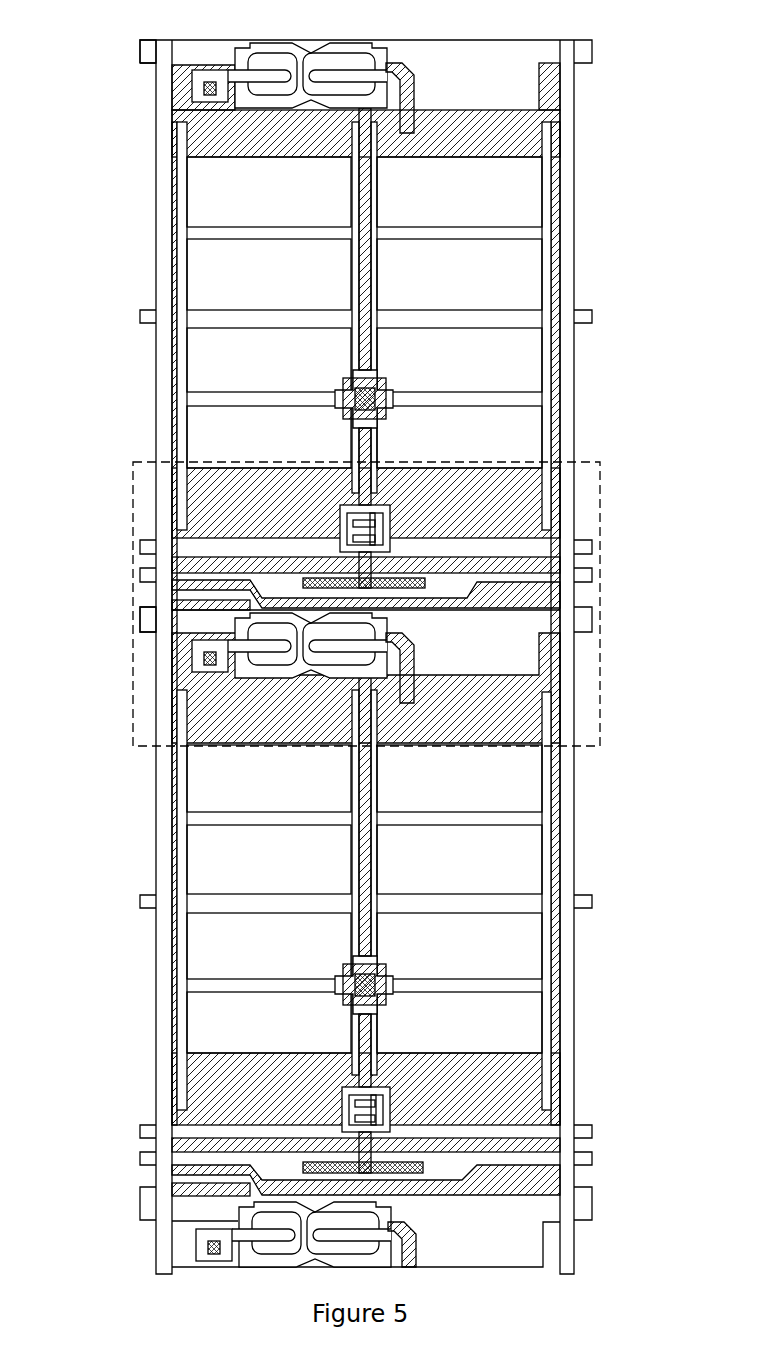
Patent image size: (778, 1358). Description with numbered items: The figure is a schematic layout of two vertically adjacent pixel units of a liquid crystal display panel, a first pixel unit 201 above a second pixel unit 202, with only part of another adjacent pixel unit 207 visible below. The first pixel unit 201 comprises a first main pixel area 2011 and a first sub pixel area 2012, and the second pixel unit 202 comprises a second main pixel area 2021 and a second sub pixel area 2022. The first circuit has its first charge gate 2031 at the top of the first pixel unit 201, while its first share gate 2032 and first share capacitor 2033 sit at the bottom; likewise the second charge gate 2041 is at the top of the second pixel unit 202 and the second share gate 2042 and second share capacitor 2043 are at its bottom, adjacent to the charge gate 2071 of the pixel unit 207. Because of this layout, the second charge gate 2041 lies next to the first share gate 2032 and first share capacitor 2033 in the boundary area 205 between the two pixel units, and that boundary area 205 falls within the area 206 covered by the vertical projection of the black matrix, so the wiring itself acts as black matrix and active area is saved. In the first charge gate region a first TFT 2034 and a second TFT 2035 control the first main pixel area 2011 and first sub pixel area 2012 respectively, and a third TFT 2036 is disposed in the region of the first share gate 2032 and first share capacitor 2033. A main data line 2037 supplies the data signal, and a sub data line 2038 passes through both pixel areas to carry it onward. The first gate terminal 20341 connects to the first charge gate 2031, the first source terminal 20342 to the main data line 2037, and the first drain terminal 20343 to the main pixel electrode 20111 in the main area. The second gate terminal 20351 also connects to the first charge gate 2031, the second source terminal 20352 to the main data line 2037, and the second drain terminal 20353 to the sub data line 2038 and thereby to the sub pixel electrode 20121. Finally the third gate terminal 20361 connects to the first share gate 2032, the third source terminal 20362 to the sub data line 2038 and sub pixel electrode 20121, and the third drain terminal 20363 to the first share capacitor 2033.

The first pixel unit 201 is at (135, 50).
The second pixel unit 202 is at (122, 775).
The boundary area 205 is at (395, 604).
The area covered by vertical projection of black matrix 206 is at (513, 1103).
The another adjacent pixel unit 207 is at (363, 1234).
The first main pixel area 2011 is at (532, 272).
The first sub pixel area 2012 is at (530, 420).
The second main pixel area 2021 is at (525, 845).
The second sub pixel area 2022 is at (530, 1022).
The first charge gate 2031 is at (540, 52).
The first share gate 2032 is at (540, 548).
The first share capacitor 2033 is at (425, 583).
The first TFT 2034 is at (352, 76).
The second TFT 2035 is at (360, 62).
The third TFT 2036 is at (365, 499).
The main data line 2037 is at (172, 205).
The sub data line 2038 is at (363, 467).
The second charge gate 2041 is at (532, 620).
The second share gate 2042 is at (537, 1140).
The second share capacitor 2043 is at (423, 1165).
The charge gate 2071 is at (525, 1230).
The main pixel electrode 20111 is at (232, 102).
The sub pixel electrode 20121 is at (358, 396).
The first gate terminal 20341 is at (247, 68).
The first source terminal 20342 is at (282, 60).
The first drain terminal 20343 is at (203, 78).
The second gate terminal 20351 is at (360, 50).
The second source terminal 20352 is at (331, 60).
The second drain terminal 20353 is at (385, 78).
The third gate terminal 20361 is at (378, 532).
The third source terminal 20362 is at (360, 523).
The third drain terminal 20363 is at (360, 539).